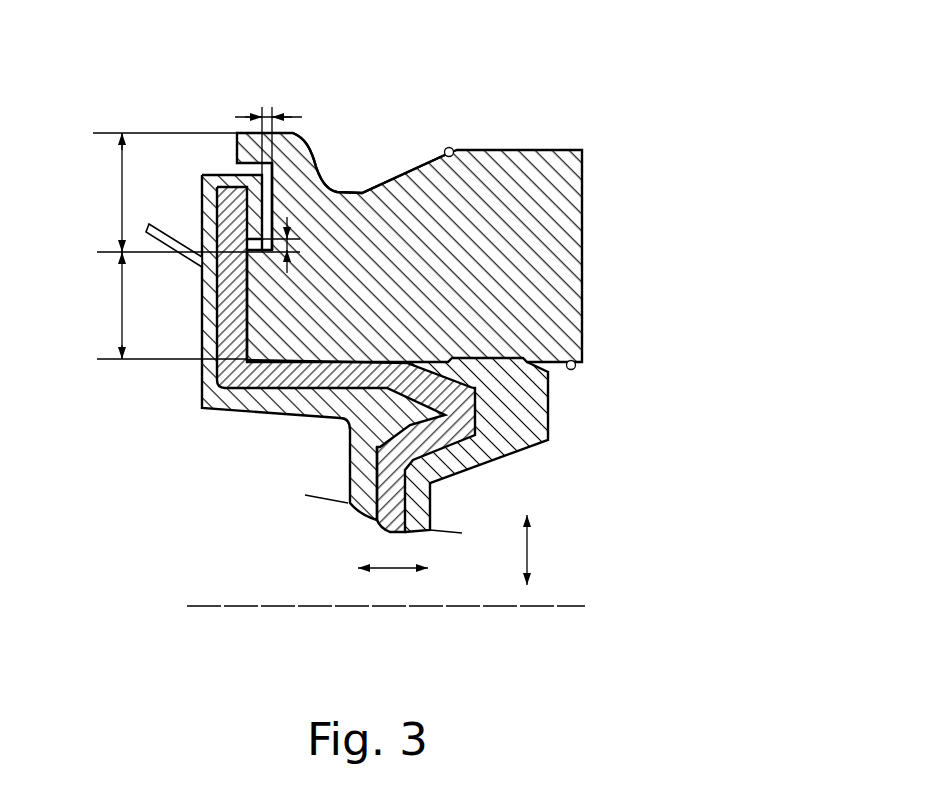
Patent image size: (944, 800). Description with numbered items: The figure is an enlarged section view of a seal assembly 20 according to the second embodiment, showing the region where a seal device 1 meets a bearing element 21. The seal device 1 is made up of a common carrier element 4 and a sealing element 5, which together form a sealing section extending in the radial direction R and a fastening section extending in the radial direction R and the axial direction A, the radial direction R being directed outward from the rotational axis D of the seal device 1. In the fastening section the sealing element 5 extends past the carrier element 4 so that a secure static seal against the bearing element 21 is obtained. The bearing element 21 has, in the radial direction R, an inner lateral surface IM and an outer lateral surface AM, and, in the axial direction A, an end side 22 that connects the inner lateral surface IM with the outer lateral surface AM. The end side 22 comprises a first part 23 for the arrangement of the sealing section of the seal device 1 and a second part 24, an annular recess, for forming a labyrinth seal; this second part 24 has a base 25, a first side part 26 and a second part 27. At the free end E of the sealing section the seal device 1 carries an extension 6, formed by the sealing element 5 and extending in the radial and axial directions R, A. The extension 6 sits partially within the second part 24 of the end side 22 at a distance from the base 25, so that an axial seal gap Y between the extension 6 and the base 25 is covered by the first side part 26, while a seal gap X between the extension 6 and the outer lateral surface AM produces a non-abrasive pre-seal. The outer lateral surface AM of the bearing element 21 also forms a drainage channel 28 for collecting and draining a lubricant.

The seal device 1 is at (623, 98).
The seal assembly 20 is at (361, 314).
The bearing element 21 is at (548, 214).
The end side 22 is at (244, 323).
The first part 23 is at (120, 328).
The second part 24 is at (120, 183).
The base 25 is at (271, 212).
The first side part 26 is at (245, 165).
The second part 27 is at (276, 208).
The drainage channel 28 is at (382, 162).
The carrier element 4 is at (467, 415).
The sealing element 5 is at (468, 457).
The extension 6 is at (315, 298).
The free end E is at (226, 175).
The seal gap X is at (299, 244).
The axial seal gap Y is at (268, 110).
The outer lateral surface AM is at (447, 148).
The inner lateral surface IM is at (574, 372).
The rotational axis D is at (202, 605).
The axial direction A is at (393, 583).
The radial direction R is at (538, 550).